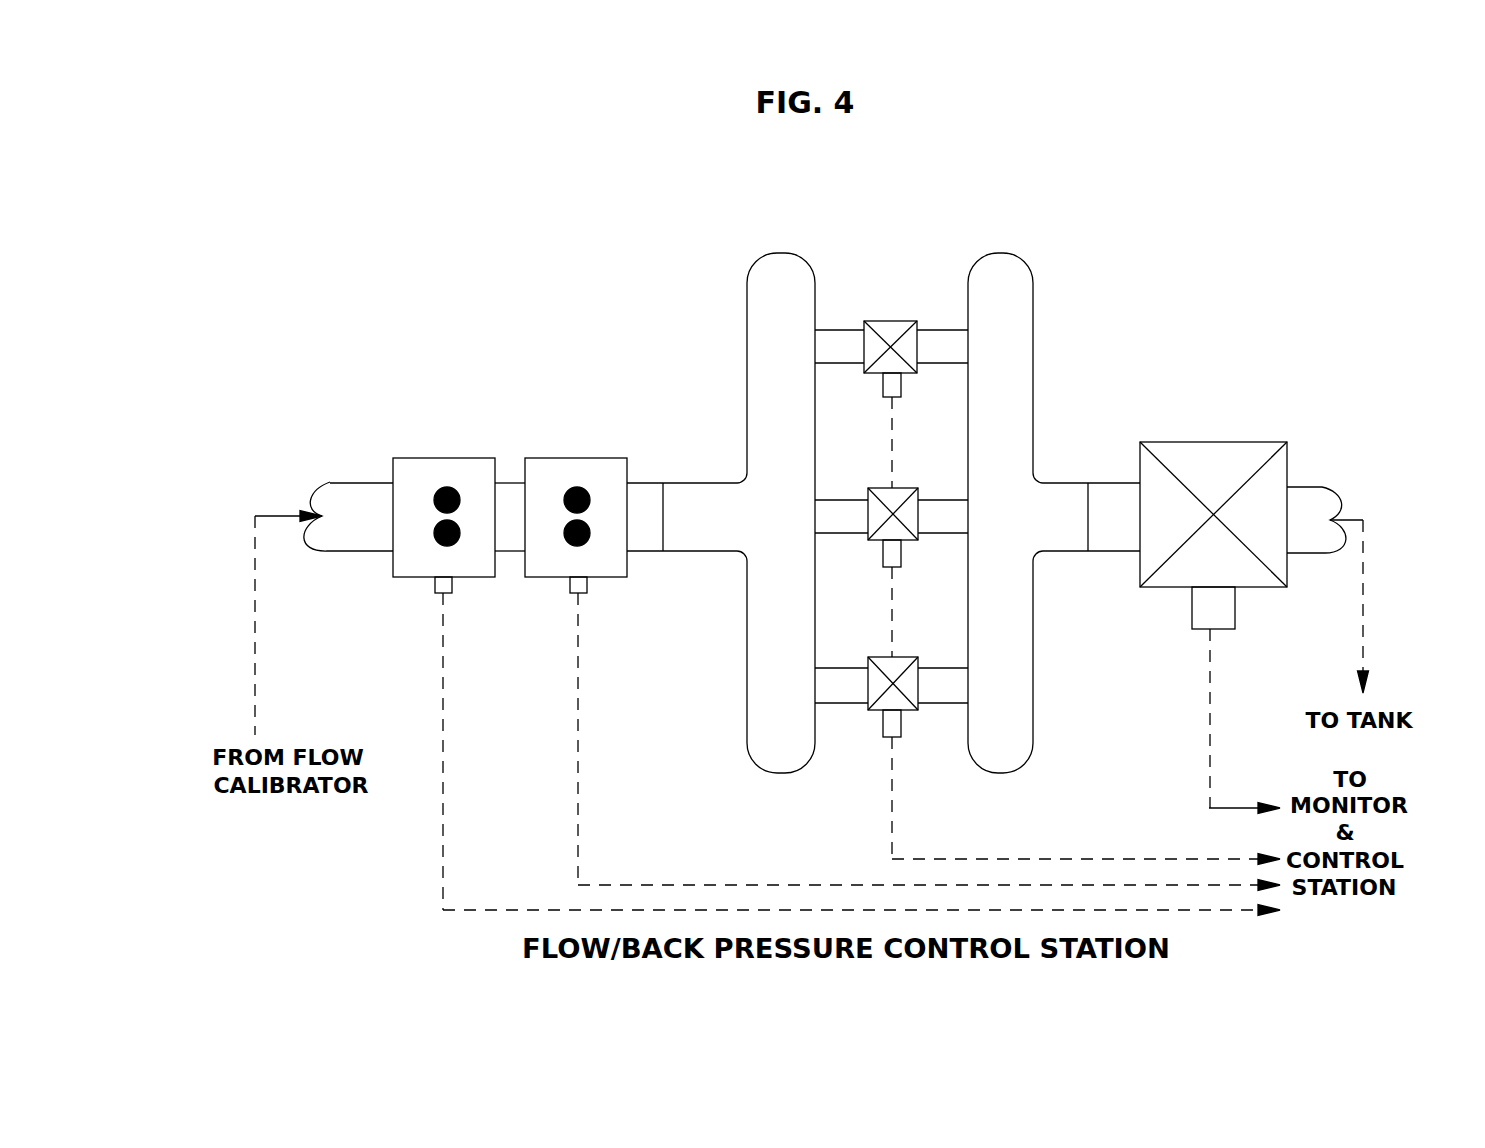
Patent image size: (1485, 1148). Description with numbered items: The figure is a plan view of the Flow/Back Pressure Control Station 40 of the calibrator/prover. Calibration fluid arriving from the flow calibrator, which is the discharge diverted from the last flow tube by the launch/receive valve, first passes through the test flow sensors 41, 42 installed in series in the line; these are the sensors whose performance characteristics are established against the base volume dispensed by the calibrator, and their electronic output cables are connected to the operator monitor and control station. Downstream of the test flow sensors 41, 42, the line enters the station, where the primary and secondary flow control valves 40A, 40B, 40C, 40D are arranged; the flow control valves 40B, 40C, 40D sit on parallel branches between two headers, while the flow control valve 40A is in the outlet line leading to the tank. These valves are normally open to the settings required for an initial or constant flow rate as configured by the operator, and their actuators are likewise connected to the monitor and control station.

The Flow/Back Pressure Control Station 40 is at (737, 345).
The flow control valve 40A is at (1197, 421).
The flow control valve 40B is at (861, 302).
The flow control valve 40C is at (917, 467).
The flow control valve 40D is at (920, 730).
The test flow sensor 41 is at (382, 442).
The test flow sensor 42 is at (567, 449).